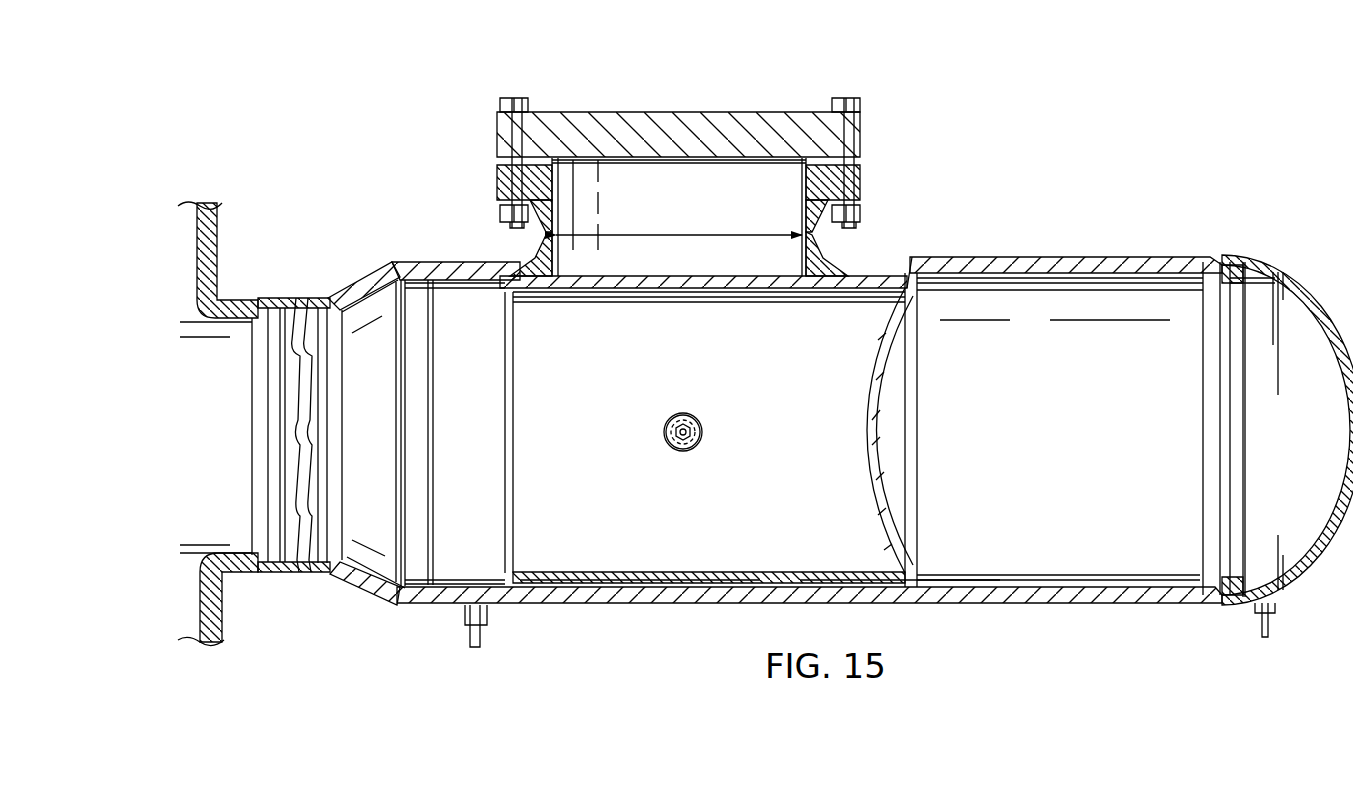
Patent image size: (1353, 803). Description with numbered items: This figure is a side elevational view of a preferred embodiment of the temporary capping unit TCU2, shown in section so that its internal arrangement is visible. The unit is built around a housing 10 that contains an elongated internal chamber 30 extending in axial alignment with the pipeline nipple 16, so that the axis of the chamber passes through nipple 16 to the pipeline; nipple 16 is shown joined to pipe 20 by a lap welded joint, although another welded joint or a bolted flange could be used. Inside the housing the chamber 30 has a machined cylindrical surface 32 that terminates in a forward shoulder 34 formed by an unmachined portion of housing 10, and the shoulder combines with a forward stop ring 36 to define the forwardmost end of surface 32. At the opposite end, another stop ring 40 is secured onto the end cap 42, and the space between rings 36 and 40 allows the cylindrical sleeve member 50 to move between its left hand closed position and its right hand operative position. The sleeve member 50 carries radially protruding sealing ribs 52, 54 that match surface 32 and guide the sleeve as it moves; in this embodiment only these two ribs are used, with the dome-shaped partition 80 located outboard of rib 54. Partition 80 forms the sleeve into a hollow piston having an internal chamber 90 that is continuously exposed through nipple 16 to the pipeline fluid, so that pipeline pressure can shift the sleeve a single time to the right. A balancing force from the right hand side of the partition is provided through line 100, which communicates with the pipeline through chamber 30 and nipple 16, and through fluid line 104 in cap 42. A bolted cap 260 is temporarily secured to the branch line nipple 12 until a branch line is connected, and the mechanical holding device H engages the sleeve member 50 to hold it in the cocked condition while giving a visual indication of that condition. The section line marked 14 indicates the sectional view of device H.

The housing 10 is at (1121, 256).
The temporary capping unit TCU2 is at (775, 397).
The branch line nipple 12 is at (862, 186).
The pipeline nipple 16 is at (298, 298).
The pipe 20 is at (218, 234).
The internal chamber 30 is at (428, 360).
The machined cylindrical surface 32 is at (1020, 278).
The forward shoulder 34 is at (470, 283).
The forward stop ring 36 is at (517, 352).
The stop ring 40 is at (1250, 522).
The end cap 42 is at (1284, 262).
The sleeve member 50 is at (788, 290).
The sealing rib 52 is at (516, 262).
The sealing rib 54 is at (838, 270).
The dome-shaped partition 80 is at (910, 462).
The internal chamber 90 is at (675, 320).
The line 100 is at (483, 636).
The fluid line 104 is at (1260, 630).
The bolted cap 260 is at (860, 134).
The mechanical holding device H is at (708, 418).
The section line 14- 14 is at (685, 372).